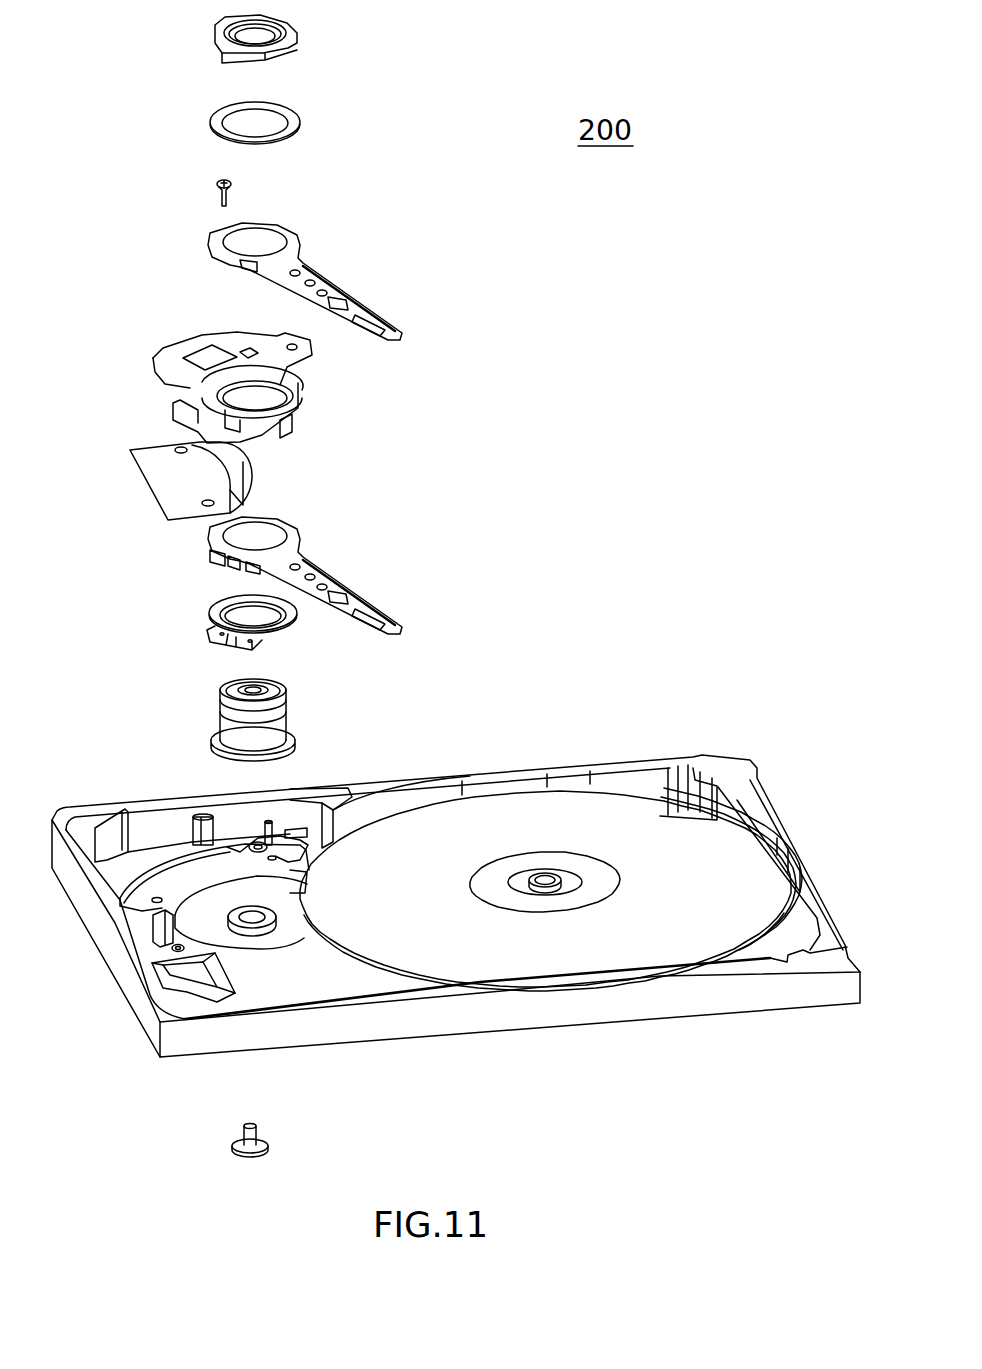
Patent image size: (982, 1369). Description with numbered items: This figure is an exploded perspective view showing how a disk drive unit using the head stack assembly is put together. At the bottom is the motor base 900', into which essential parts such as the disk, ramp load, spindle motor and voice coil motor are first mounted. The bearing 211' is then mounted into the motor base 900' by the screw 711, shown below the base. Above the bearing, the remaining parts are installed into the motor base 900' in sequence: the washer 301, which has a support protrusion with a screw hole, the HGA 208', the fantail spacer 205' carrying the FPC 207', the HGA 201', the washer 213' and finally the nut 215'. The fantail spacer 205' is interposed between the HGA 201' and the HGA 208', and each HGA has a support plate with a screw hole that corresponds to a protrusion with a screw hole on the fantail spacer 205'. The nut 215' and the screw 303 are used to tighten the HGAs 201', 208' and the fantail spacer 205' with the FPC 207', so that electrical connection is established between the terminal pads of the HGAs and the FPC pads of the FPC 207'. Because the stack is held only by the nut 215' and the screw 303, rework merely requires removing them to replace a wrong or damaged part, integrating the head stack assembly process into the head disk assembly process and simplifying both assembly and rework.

The nut 215' is at (343, 52).
The washer 213' is at (355, 143).
The screw 303 is at (225, 200).
The HGA 201' is at (332, 281).
The fantail spacer 205' is at (180, 370).
The FPC 207' is at (247, 481).
The HGA 208' is at (348, 575).
The washer 301 is at (213, 607).
The bearing 211' is at (355, 720).
The motor base 900' is at (456, 946).
The screw 711 is at (245, 1128).